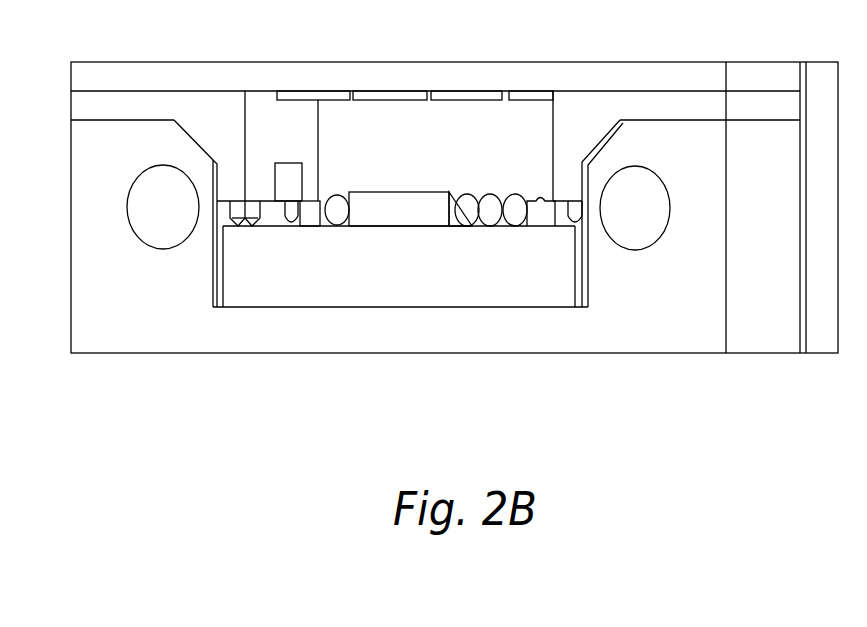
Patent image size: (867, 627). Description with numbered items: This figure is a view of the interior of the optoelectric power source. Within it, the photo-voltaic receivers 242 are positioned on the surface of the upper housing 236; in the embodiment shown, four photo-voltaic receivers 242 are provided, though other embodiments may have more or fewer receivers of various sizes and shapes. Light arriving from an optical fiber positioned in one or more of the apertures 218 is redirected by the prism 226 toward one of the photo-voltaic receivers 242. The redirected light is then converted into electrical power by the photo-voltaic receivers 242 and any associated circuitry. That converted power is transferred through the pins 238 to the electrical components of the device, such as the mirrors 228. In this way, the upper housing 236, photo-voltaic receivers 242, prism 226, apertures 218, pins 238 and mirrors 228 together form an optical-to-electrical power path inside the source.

The upper housing 236 is at (71, 73).
The photo-voltaic receivers 242 is at (312, 97).
The pins 238 is at (230, 208).
The mirrors 228 is at (308, 209).
The prism 226 is at (390, 209).
The apertures 218 is at (490, 210).